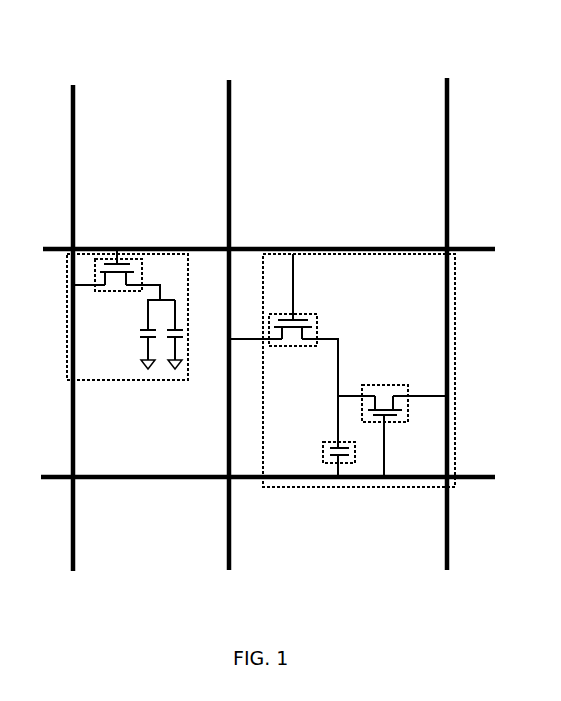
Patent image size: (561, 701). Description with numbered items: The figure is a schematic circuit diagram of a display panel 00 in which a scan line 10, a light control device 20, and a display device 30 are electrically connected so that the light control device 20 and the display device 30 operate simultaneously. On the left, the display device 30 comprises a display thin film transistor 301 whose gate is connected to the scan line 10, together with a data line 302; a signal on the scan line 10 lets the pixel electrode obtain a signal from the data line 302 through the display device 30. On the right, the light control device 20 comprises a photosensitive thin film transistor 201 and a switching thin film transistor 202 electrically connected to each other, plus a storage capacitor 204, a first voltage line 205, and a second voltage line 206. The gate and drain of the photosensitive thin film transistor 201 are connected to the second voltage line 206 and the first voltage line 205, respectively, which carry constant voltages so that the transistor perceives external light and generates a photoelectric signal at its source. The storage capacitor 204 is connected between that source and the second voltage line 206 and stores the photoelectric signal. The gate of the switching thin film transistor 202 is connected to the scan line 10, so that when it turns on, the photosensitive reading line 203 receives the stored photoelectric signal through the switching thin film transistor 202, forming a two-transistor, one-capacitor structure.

The display panel 00 is at (82, 50).
The scan line 10 is at (478, 247).
The light control device 20 is at (262, 273).
The display device 30 is at (135, 339).
The photosensitive thin film transistor 201 is at (369, 385).
The switching thin film transistor 202 is at (298, 312).
The photosensitive reading line 203 is at (232, 145).
The storage capacitor 204 is at (322, 442).
The first voltage line 205 is at (443, 510).
The second voltage line 206 is at (245, 482).
The display thin film transistor 301 is at (107, 291).
The data line 302 is at (76, 413).